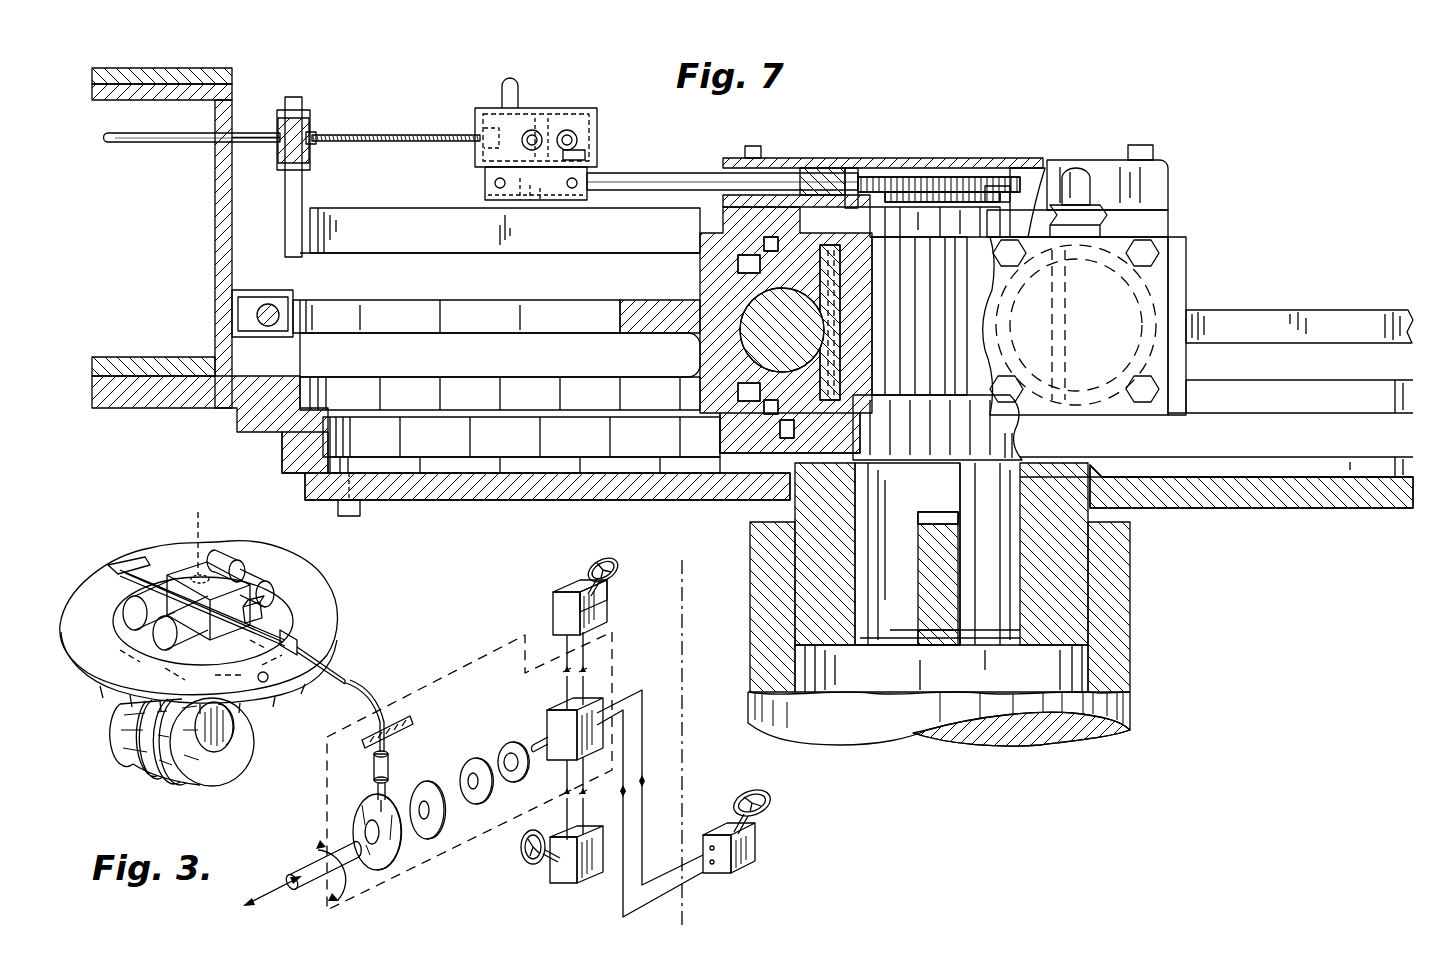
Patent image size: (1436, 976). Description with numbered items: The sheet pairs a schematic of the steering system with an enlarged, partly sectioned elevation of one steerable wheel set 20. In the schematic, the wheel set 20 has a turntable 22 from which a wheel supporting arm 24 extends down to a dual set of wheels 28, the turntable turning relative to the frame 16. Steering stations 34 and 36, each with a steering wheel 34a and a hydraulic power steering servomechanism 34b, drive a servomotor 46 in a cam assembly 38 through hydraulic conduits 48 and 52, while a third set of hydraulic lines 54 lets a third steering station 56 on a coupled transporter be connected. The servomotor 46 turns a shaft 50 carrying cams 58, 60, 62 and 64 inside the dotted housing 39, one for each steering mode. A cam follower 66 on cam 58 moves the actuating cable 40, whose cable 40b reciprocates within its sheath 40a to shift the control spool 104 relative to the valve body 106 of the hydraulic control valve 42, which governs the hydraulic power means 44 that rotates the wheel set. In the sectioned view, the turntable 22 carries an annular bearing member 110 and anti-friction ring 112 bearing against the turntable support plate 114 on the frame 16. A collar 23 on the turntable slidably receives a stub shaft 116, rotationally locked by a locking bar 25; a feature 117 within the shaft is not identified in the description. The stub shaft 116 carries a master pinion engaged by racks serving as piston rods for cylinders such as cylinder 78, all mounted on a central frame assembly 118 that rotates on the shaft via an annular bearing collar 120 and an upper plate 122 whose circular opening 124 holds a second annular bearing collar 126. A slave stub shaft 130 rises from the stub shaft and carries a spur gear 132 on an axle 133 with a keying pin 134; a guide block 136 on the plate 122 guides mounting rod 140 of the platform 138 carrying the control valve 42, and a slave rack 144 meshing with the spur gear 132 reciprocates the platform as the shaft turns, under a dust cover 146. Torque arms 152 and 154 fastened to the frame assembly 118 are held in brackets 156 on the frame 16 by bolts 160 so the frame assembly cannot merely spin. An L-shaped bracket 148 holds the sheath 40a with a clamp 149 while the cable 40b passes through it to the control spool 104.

In FIG. 7, the frame assembly 16 is at (214, 249).
In FIG. 7, the wheel set 20 is at (1017, 593).
In FIG. 3, the wheel set 20 is at (194, 674).
In FIG. 7, the turntable 22 is at (445, 489).
In FIG. 3, the turntable 22 is at (108, 655).
In FIG. 7, the collar 23 is at (1052, 632).
In FIG. 7, the wheel supporting arm 24 is at (962, 604).
In FIG. 3, the wheel supporting arm 24 is at (290, 674).
In FIG. 7, the locking bar 25 is at (938, 625).
In FIG. 3, the dual set of wheels 28 is at (112, 716).
In FIG. 3, the steering station 34 is at (590, 594).
In FIG. 3, the steering wheel 34a is at (622, 576).
In FIG. 3, the hydraulic power steering servomechanism 34b is at (607, 612).
In FIG. 3, the steering station 36 is at (562, 880).
In FIG. 3, the cam assembly 38 is at (402, 811).
In FIG. 3, the housing 39 is at (327, 800).
In FIG. 7, the actuating cable 40 is at (180, 144).
In FIG. 3, the actuating cable 40 is at (345, 668).
In FIG. 7, the sheath 40a is at (250, 131).
In FIG. 7, the cable 40b is at (366, 133).
In FIG. 7, the hydraulic control valve 42 is at (567, 110).
In FIG. 3, the hydraulic control valve 42 is at (290, 604).
In FIG. 3, the hydraulic power means 44 is at (250, 566).
In FIG. 3, the servomotor 46 is at (560, 707).
In FIG. 3, the hydraulic conduits 48 is at (567, 686).
In FIG. 3, the shaft 50 is at (302, 866).
In FIG. 3, the hydraulic conduits 52 is at (578, 813).
In FIG. 3, the hydraulic lines 54 is at (655, 885).
In FIG. 3, the third steering station 56 is at (756, 852).
In FIG. 3, the cam 58 is at (385, 870).
In FIG. 7, the cam 60 is at (913, 360).
In FIG. 3, the cam 60 is at (418, 792).
In FIG. 7, the cam 62 is at (745, 346).
In FIG. 3, the cam 62 is at (470, 764).
In FIG. 3, the cam 64 is at (514, 748).
In FIG. 3, the cam follower 66 is at (390, 770).
In FIG. 7, the cylinder 78 is at (1170, 290).
In FIG. 7, the control spool 104 is at (582, 106).
In FIG. 7, the valve body 106 is at (582, 152).
In FIG. 7, the annular bearing member 110 is at (300, 466).
In FIG. 7, the anti-friction ring 112 is at (264, 406).
In FIG. 7, the turntable support plate 114 is at (118, 398).
In FIG. 7, the stub shaft 116 is at (896, 440).
In FIG. 7, the inner shaft 117 is at (930, 522).
In FIG. 7, the central frame assembly 118 is at (700, 236).
In FIG. 7, the annular bearing collar 120 is at (790, 430).
In FIG. 7, the plate 122 is at (828, 166).
In FIG. 7, the circular opening 124 is at (852, 208).
In FIG. 7, the second annular bearing collar 126 is at (876, 222).
In FIG. 7, the slave stub shaft 130 is at (1035, 168).
In FIG. 7, the spur gear 132 is at (998, 184).
In FIG. 7, the axle 133 is at (956, 190).
In FIG. 7, the keying pin 134 is at (906, 177).
In FIG. 7, the guide block 136 is at (736, 158).
In FIG. 7, the platform 138 is at (485, 190).
In FIG. 7, the mounting rod 140 is at (652, 174).
In FIG. 7, the slave rack 144 is at (1040, 182).
In FIG. 7, the dust cover 146 is at (1162, 160).
In FIG. 7, the L-shaped bracket 148 is at (384, 208).
In FIG. 7, the clamp 149 is at (306, 120).
In FIG. 7, the torque arm 152 is at (506, 326).
In FIG. 7, the torque arm 154 is at (1312, 344).
In FIG. 7, the bracket 156 is at (241, 296).
In FIG. 7, the bolts 160 is at (283, 318).